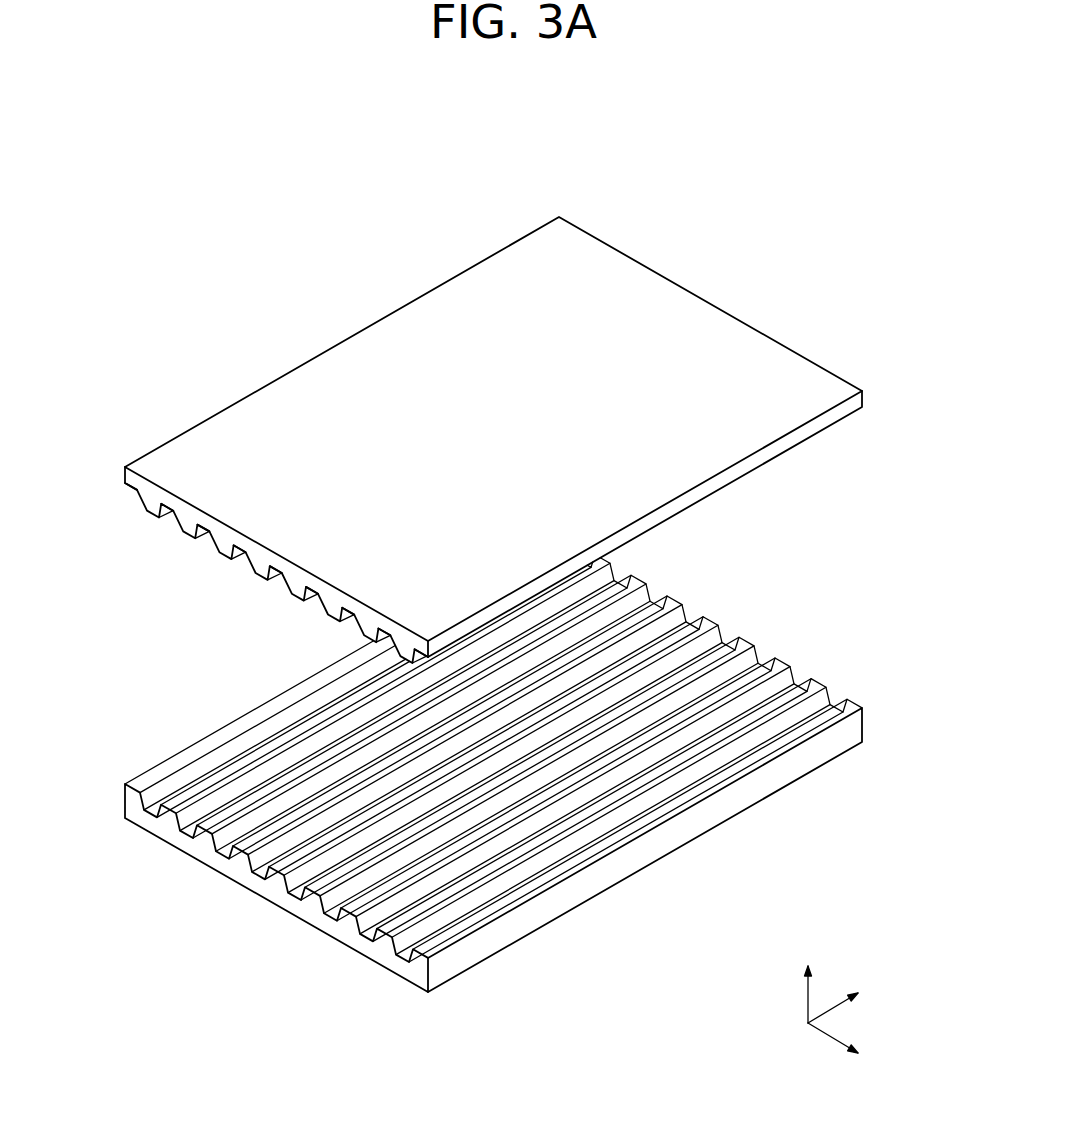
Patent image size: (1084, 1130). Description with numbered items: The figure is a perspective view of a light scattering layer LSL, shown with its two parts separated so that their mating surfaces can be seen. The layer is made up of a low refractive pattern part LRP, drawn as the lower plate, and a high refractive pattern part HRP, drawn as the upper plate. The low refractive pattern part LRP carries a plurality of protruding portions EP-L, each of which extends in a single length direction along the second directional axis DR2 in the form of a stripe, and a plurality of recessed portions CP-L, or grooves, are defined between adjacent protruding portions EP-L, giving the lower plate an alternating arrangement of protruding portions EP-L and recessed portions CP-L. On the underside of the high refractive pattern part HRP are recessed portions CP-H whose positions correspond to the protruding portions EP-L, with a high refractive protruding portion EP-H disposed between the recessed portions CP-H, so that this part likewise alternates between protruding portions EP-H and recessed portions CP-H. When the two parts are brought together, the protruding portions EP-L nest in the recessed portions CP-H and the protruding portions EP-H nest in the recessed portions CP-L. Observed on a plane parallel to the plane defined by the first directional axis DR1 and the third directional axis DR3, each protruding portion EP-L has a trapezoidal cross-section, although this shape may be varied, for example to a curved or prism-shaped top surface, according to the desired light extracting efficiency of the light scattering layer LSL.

The light scattering layer LSL is at (368, 275).
The high refractive pattern part HRP is at (867, 398).
The low refractive pattern part LRP is at (867, 728).
The high refractive protruding portion EP-H is at (147, 507).
The recessed portion of the high refractive pattern part CP-H is at (208, 539).
The protruding portion of the low refractive pattern part EP-L is at (255, 758).
The recessed portion of the low refractive pattern part CP-L is at (185, 778).
The first directional axis DR1 is at (857, 1048).
The second directional axis DR2 is at (857, 999).
The third directional axis DR3 is at (807, 981).